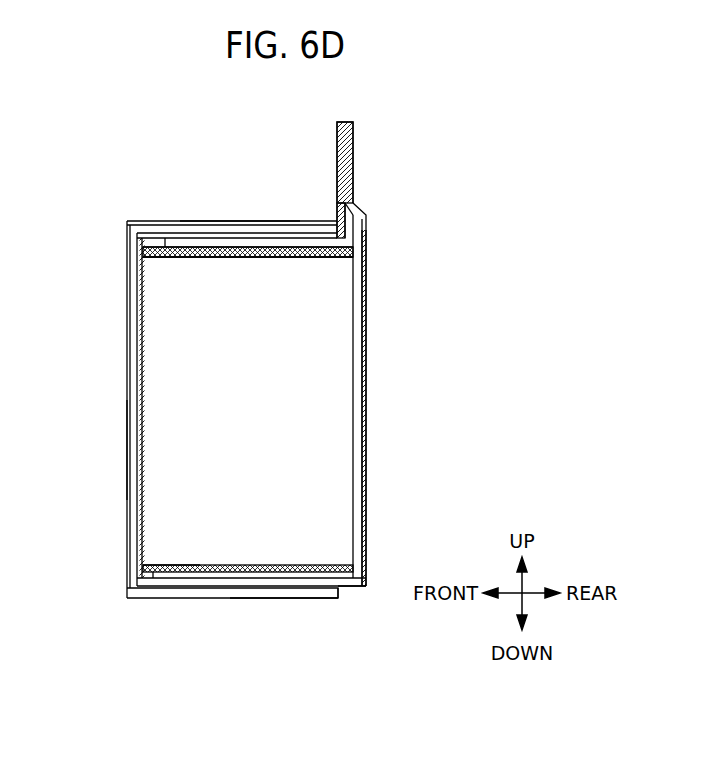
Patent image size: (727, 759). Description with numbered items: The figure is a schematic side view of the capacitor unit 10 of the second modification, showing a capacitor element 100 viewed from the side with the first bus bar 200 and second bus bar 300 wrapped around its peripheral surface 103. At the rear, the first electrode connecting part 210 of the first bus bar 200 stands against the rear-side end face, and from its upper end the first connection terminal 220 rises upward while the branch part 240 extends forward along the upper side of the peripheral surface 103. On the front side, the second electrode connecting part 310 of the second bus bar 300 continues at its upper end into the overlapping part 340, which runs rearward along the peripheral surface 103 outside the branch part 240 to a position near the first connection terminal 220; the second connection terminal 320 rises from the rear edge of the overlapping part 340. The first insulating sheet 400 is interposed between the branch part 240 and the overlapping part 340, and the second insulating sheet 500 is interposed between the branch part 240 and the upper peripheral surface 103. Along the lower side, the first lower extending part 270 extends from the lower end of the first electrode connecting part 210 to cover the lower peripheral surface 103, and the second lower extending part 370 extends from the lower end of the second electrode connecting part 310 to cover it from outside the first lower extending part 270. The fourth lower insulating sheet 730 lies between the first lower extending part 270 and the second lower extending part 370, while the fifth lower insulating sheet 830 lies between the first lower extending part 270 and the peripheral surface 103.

The capacitor unit 10 is at (125, 203).
The capacitor element 100 is at (137, 300).
The peripheral surface 103 is at (342, 272).
The first bus bar 200 is at (370, 342).
The first electrode connecting part 210 is at (363, 423).
The first connection terminal 220 is at (357, 158).
The branch part 240 is at (252, 240).
The first lower extending part 270 is at (230, 578).
The second bus bar 300 is at (128, 395).
The second electrode connecting part 310 is at (128, 490).
The second connection terminal 320 is at (338, 140).
The overlapping part 340 is at (192, 220).
The second lower extending part 370 is at (277, 600).
The first insulating sheet 400 is at (272, 236).
The second insulating sheet 500 is at (220, 258).
The fourth lower insulating sheet 730 is at (343, 590).
The fifth lower insulating sheet 830 is at (182, 573).